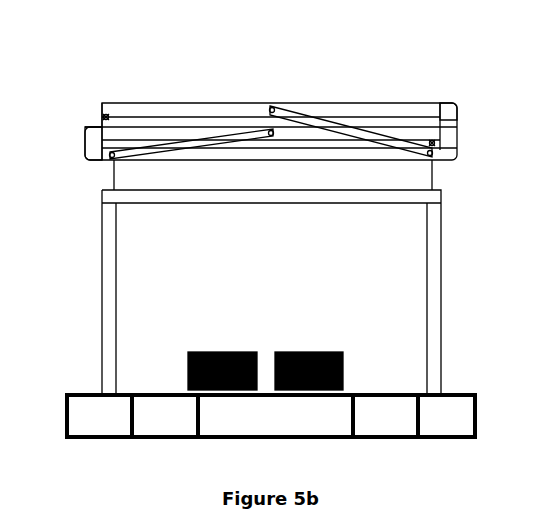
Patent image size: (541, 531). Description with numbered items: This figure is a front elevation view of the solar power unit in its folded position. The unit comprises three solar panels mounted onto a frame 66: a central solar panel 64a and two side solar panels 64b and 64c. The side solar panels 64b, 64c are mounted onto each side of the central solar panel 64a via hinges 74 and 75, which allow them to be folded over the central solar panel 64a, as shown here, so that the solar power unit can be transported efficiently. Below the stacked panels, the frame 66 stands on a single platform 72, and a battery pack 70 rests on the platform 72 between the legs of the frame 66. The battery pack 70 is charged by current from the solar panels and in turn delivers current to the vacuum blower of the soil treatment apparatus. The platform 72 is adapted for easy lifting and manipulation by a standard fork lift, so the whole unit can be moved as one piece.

The central solar panel 64a is at (401, 160).
The solar panel 64b is at (365, 105).
The solar panel 64c is at (172, 128).
The frame 66 is at (437, 278).
The battery pack 70 is at (213, 348).
The platform 72 is at (77, 402).
The hinge 74 is at (458, 111).
The hinge 75 is at (82, 126).